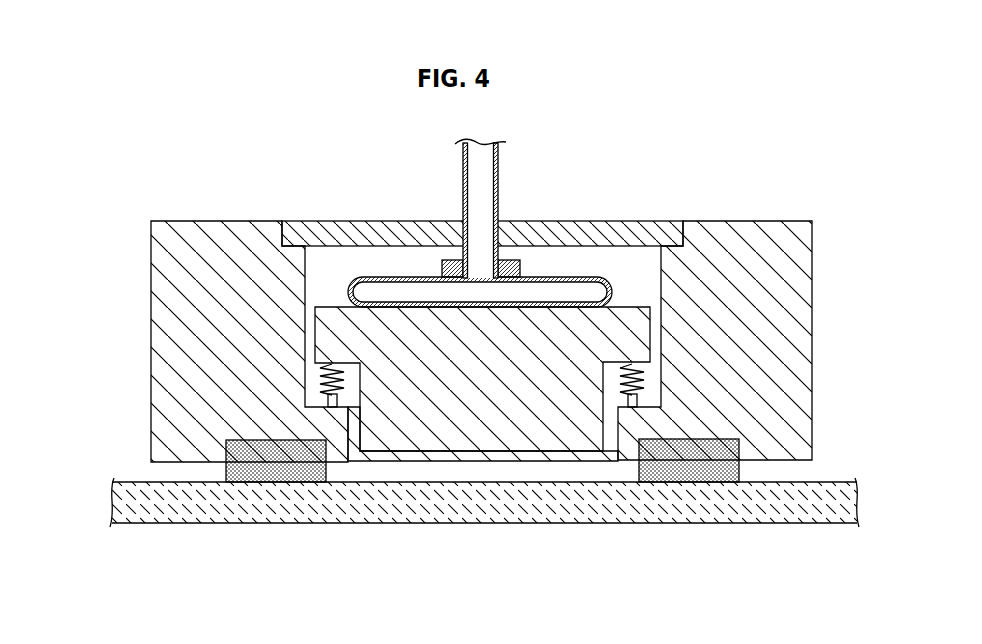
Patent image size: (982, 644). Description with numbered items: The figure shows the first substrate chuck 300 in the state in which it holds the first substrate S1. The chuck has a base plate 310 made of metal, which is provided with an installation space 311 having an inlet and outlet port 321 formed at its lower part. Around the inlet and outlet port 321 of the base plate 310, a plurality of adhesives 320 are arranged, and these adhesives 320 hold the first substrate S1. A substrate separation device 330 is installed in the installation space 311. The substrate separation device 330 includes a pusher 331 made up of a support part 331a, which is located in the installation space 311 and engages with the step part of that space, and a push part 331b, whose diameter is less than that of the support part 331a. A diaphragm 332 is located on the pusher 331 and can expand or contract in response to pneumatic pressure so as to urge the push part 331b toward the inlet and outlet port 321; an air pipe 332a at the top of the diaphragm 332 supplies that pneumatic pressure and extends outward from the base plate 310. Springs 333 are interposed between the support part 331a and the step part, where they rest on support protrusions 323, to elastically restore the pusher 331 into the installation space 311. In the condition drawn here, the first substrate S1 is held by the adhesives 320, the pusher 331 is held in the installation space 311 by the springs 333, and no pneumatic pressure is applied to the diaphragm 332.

The first substrate chuck 300 is at (456, 344).
The base plate 310 is at (798, 285).
The installation space 311 is at (329, 262).
The adhesives 320 is at (705, 480).
The inlet and outlet port 321 is at (493, 456).
The support protrusions 323 is at (647, 397).
The substrate separation device 330 is at (450, 289).
The pusher 331 is at (345, 379).
The support part 331a is at (332, 345).
The push part 331b is at (372, 412).
The diaphragm 332 is at (555, 277).
The air pipe 332a is at (499, 160).
The springs 333 is at (643, 373).
The first substrate S1 is at (798, 507).